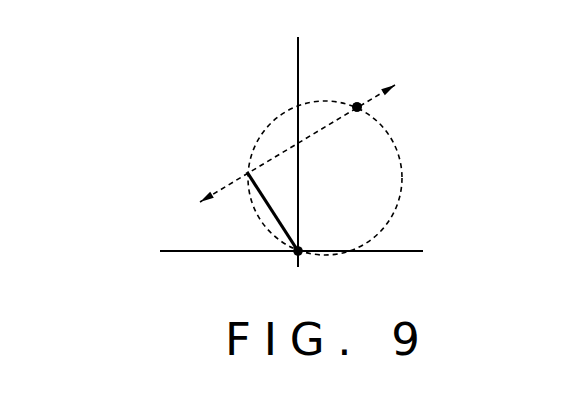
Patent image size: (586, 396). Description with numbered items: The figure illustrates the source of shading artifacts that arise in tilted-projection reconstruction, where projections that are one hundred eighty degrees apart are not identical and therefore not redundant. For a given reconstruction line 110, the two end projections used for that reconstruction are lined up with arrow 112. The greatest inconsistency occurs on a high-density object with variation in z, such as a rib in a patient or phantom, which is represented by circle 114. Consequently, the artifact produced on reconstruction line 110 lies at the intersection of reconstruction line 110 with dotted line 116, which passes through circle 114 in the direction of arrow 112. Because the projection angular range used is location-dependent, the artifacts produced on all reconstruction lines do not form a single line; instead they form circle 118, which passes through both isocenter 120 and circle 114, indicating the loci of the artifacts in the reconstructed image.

The reconstruction line 110 is at (258, 193).
The arrow 112 is at (331, 125).
The circle 114 is at (357, 111).
The dotted line 116 is at (278, 156).
The circle 118 is at (393, 139).
The isocenter 120 is at (296, 255).